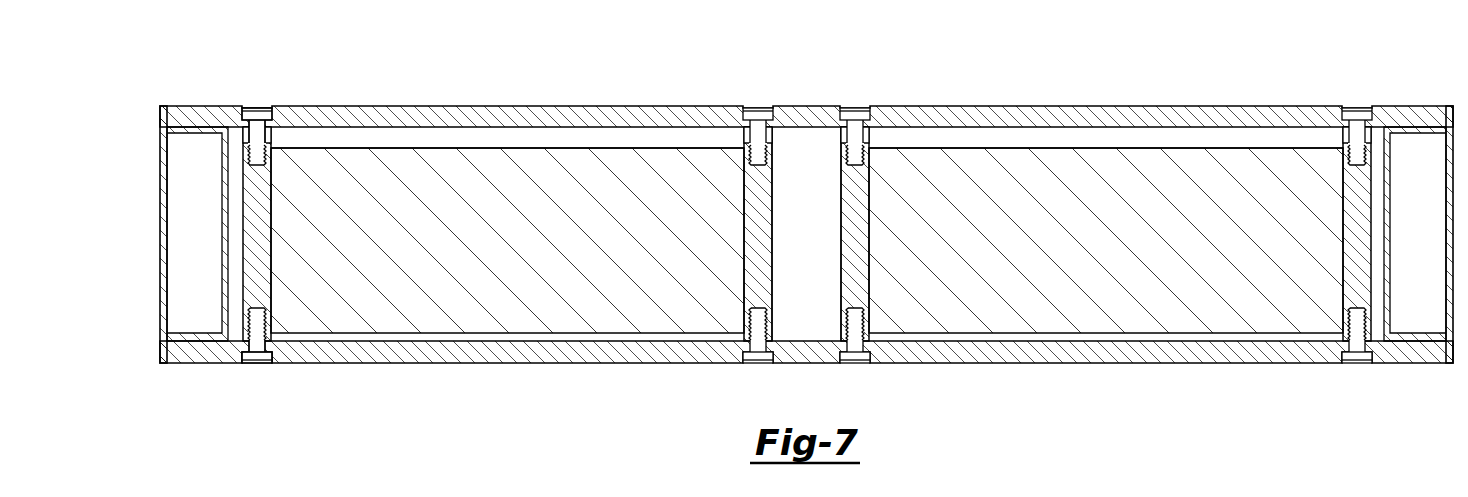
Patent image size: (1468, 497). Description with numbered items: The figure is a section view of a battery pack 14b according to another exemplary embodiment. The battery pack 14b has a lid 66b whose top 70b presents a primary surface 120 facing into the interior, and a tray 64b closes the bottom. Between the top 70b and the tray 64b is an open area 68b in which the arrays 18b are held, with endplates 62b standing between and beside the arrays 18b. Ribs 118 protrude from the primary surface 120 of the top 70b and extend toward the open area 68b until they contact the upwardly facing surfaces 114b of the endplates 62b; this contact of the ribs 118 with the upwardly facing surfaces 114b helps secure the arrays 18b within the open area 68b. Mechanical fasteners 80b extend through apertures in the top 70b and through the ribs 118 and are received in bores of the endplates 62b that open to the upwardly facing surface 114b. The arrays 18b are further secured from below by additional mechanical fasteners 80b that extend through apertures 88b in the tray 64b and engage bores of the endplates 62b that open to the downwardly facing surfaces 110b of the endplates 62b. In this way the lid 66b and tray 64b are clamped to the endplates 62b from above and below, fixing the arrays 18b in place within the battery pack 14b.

The battery pack 14b is at (806, 233).
The array 18b is at (640, 139).
The endplate 62b is at (253, 237).
The tray 64b is at (475, 356).
The lid 66b is at (493, 142).
The open area 68b is at (812, 146).
The top 70b is at (806, 96).
The mechanical fastener 80b is at (248, 136).
The aperture 88b is at (270, 356).
The downwardly facing surface 110b is at (268, 350).
The upwardly facing surface 114b is at (267, 118).
The rib 118 is at (254, 135).
The primary surface 120 is at (490, 137).